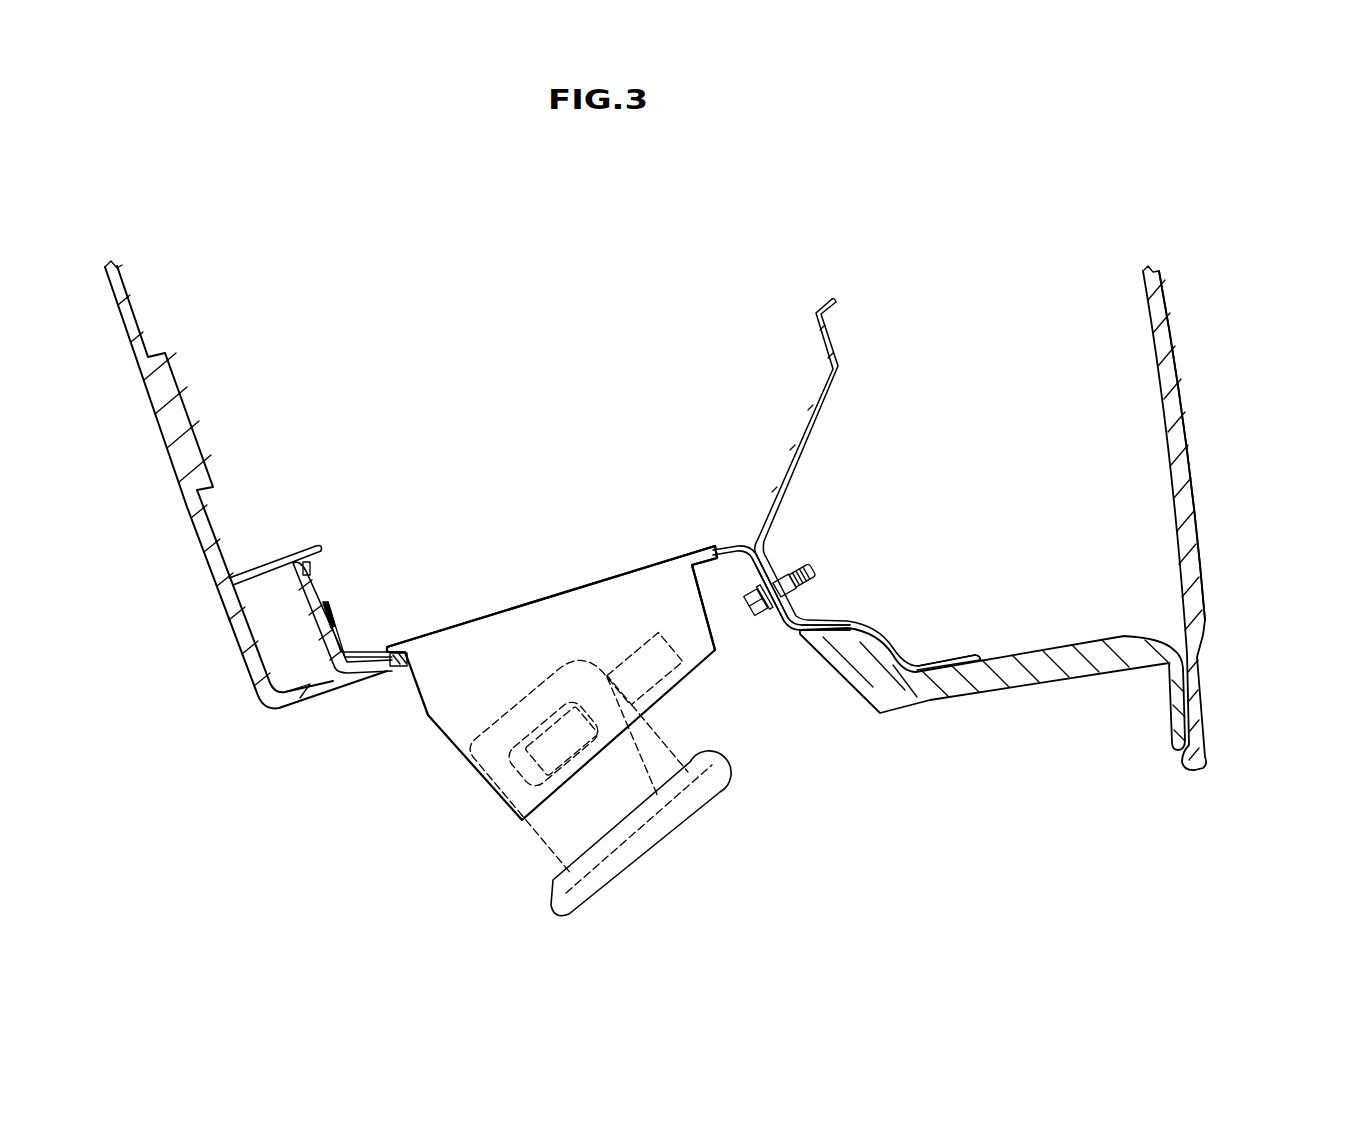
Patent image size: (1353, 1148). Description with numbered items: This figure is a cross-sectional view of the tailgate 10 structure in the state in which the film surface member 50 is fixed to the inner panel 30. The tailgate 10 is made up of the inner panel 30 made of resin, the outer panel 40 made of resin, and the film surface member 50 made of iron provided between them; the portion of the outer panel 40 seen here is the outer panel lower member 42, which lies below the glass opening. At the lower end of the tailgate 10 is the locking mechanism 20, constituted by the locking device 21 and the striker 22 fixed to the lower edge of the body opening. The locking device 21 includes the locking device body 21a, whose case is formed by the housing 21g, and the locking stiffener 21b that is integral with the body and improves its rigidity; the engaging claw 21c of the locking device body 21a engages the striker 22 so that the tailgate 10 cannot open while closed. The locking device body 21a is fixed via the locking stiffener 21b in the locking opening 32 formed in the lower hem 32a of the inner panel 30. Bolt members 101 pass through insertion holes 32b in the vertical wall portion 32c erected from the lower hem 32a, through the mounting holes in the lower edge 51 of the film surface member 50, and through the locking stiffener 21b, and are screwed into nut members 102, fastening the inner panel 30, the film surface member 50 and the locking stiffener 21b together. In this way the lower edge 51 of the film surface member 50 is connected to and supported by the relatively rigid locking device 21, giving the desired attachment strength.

The tailgate 10 is at (590, 421).
The locking mechanism 20 is at (332, 750).
The locking device 21 is at (453, 745).
The locking device body 21a is at (658, 563).
The locking stiffener 21b is at (732, 548).
The engaging claw 21c is at (630, 657).
The housing 21g is at (711, 630).
The striker 22 is at (543, 832).
The inner panel 30 is at (190, 505).
The locking opening 32 is at (735, 556).
The lower hem 32a is at (1059, 658).
The insertion hole 32b is at (760, 553).
The vertical wall portion 32c is at (813, 620).
The outer panel 40 is at (1160, 306).
The outer panel lower member 42 is at (1186, 451).
The film surface member 50 is at (838, 363).
The lower edge 51 is at (960, 657).
The bolt member 101 is at (768, 618).
The nut member 102 is at (805, 562).